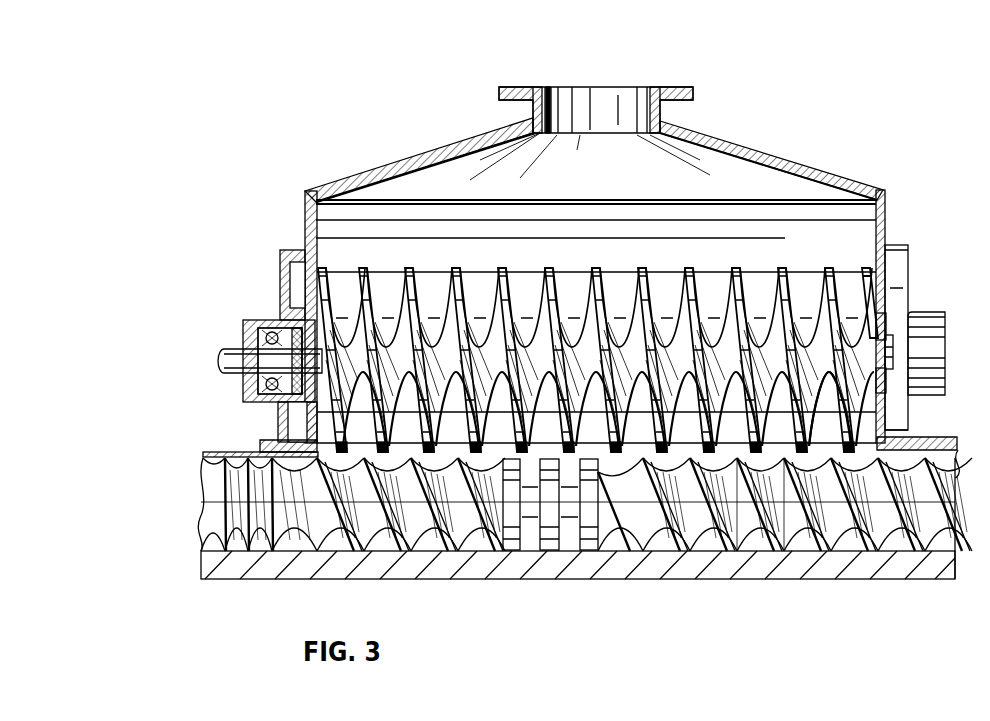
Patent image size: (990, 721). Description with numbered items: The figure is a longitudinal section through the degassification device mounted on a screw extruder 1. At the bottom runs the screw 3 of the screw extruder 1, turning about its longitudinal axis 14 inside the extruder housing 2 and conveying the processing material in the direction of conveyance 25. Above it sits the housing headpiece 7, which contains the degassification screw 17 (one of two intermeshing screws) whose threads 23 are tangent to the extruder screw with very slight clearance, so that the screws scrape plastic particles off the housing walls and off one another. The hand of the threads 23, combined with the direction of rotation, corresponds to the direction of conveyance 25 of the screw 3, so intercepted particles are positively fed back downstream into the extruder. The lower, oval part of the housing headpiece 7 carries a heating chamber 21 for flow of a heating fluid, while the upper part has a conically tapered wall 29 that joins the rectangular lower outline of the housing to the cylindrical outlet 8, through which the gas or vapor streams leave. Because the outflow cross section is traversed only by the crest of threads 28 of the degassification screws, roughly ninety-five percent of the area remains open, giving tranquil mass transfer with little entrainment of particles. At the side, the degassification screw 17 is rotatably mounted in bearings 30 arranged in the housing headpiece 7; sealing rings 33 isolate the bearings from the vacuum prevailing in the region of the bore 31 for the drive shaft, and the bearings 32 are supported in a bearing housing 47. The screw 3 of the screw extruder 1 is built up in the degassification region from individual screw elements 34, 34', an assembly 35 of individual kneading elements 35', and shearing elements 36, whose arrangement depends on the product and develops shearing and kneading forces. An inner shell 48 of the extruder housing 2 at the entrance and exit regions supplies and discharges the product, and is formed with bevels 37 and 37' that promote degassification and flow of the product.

The screw extruder 1 is at (685, 603).
The housing 2 is at (236, 580).
The screw 3 is at (745, 536).
The housing headpiece 7 is at (397, 168).
The outlet 8 is at (660, 87).
The longitudinal axis 14 is at (962, 505).
The degassification screw 17 is at (576, 302).
The heating chamber 21 is at (300, 251).
The threads 23 is at (700, 292).
The direction of conveyance 25 is at (900, 537).
The crest of threads 28 is at (650, 260).
The conically tapered wall 29 is at (770, 162).
The bearings 30 is at (248, 334).
The bore 31 is at (266, 396).
The bearings 32 is at (222, 362).
The sealing rings 33 is at (284, 326).
The screw element 34 is at (411, 539).
The screw element 34' is at (259, 538).
The assembly of kneading elements 35 is at (540, 539).
The kneading element 35' is at (611, 539).
The shearing elements 36 is at (806, 537).
The bevel 37 is at (316, 484).
The bevel 37' is at (895, 488).
The bearing housing 47 is at (243, 348).
The inner shell 48 is at (206, 454).